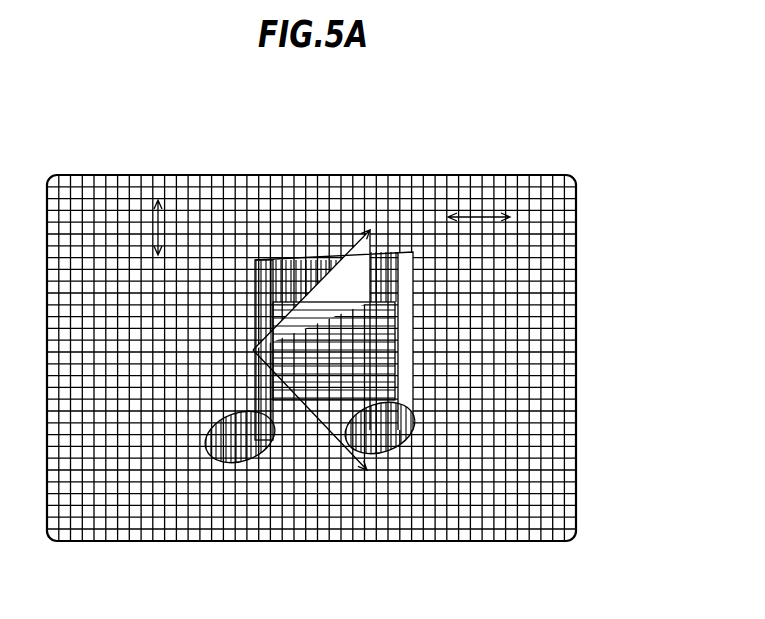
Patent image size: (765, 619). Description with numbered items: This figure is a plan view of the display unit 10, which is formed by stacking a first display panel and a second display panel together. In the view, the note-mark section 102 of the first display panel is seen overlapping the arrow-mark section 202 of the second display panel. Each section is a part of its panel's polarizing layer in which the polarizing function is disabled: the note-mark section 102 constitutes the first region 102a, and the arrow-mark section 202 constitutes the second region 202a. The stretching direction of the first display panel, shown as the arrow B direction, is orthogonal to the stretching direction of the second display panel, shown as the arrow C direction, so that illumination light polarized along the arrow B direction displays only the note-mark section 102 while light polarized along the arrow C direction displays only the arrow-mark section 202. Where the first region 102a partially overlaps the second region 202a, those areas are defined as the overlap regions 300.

The display unit 10 is at (576, 268).
The overlap regions 300 is at (272, 362).
The note-mark section 102 is at (212, 448).
The first region 102a is at (245, 455).
The arrow-mark section 202 is at (340, 402).
The second region 202a is at (347, 452).
The arrow B direction B is at (480, 217).
The arrow C direction C is at (158, 200).